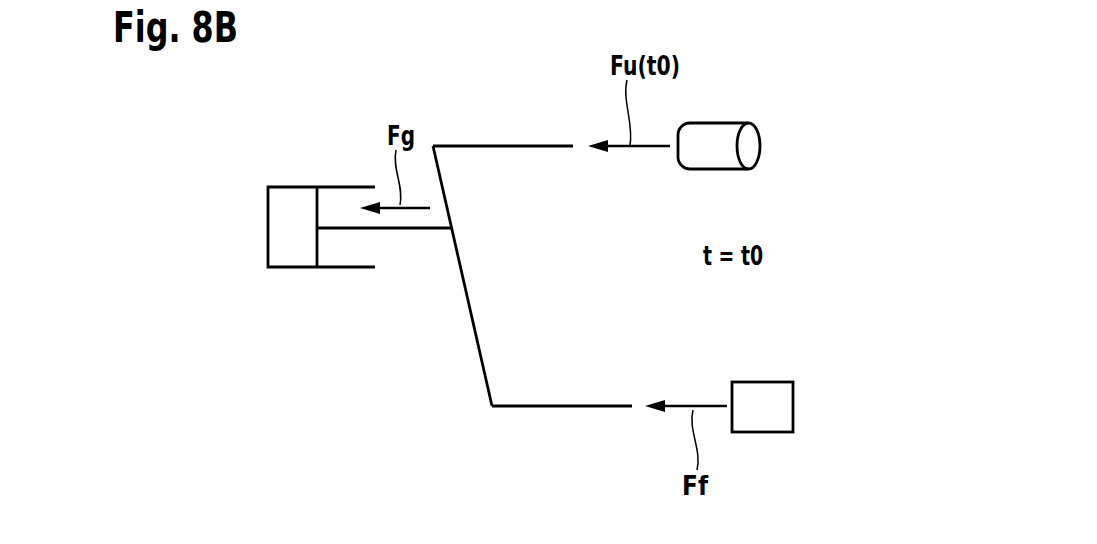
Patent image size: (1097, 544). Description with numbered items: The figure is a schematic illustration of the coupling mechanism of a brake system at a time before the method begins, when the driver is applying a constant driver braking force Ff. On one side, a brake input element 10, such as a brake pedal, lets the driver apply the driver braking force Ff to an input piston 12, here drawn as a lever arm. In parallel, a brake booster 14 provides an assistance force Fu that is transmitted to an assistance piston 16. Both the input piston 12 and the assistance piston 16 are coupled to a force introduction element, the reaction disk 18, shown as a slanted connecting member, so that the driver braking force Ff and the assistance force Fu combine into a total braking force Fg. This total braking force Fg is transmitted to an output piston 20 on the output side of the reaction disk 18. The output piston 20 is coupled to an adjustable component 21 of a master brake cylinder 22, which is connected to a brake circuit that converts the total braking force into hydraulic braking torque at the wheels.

The brake input element 10 is at (763, 422).
The input piston 12 is at (557, 408).
The brake booster 14 is at (714, 128).
The assistance piston 16 is at (507, 145).
The reaction disk 18 is at (475, 318).
The output piston 20 is at (407, 231).
The adjustable component 21 is at (317, 245).
The master brake cylinder 22 is at (290, 255).